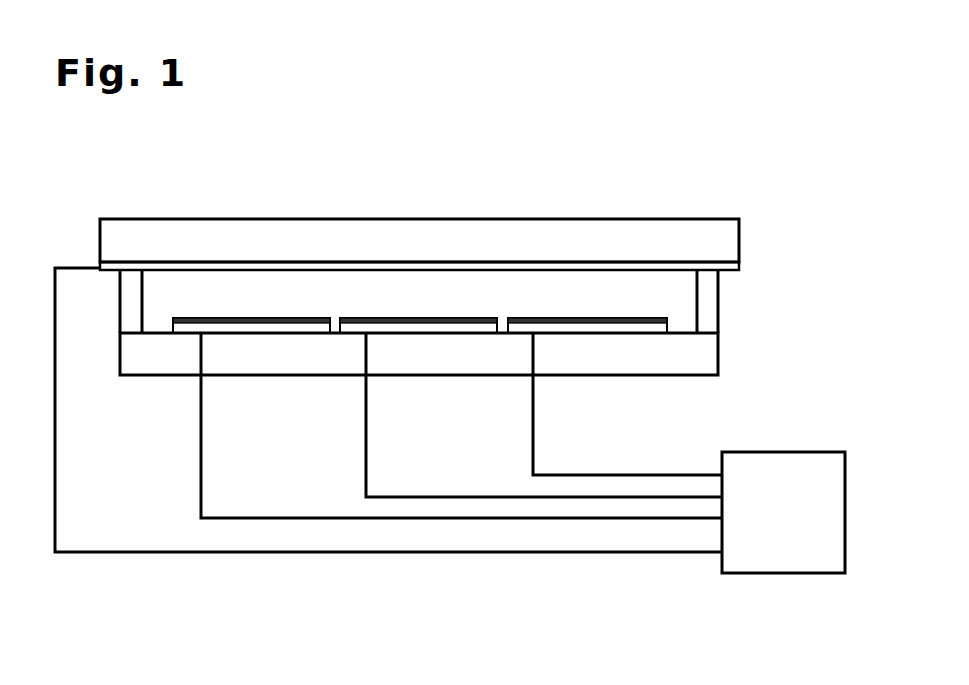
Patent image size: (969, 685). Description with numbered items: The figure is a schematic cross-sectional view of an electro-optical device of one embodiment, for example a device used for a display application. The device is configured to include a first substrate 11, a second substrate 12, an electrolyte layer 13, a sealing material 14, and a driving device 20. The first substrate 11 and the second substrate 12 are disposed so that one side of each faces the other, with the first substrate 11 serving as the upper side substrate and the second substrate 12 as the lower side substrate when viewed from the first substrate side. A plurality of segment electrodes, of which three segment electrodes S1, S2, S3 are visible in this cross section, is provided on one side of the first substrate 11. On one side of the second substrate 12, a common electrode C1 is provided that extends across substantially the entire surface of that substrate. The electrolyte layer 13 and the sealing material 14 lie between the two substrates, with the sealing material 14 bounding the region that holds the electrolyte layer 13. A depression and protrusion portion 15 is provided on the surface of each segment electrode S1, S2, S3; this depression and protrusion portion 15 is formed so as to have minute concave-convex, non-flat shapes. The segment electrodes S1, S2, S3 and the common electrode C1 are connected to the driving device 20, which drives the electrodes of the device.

The first substrate 11 is at (719, 355).
The second substrate 12 is at (740, 238).
The electrolyte layer 13 is at (688, 290).
The sealing material 14 is at (710, 320).
The depression and protrusion portion 15 is at (207, 316).
The driving device 20 is at (788, 452).
The common electrode C1 is at (650, 262).
The segment electrode S1 is at (298, 327).
The segment electrode S2 is at (455, 328).
The segment electrode S3 is at (630, 328).